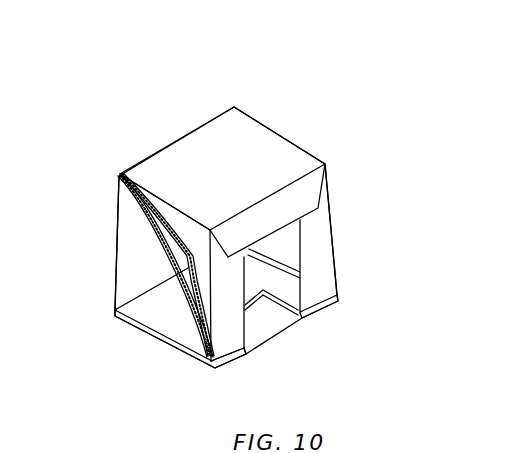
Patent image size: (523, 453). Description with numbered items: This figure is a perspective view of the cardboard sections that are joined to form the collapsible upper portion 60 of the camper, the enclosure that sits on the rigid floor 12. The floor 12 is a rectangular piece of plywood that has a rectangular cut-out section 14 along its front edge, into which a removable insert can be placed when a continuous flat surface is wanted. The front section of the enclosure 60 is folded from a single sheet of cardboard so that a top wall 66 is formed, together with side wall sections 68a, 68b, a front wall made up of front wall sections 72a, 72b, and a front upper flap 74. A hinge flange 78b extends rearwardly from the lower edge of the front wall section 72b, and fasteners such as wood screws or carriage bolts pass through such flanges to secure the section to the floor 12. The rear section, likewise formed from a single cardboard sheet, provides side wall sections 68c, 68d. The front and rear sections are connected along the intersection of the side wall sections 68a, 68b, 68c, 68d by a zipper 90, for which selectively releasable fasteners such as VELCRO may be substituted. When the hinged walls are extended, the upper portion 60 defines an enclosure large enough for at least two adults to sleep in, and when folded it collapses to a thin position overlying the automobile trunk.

The collapsible upper portion 60 is at (320, 98).
The top wall 66 is at (275, 147).
The side wall section 68a is at (172, 218).
The side wall section 68b is at (203, 262).
The side wall section 68c is at (130, 251).
The side wall section 68d is at (160, 315).
The rigid floor 12 is at (188, 353).
The zipper 90 is at (118, 216).
The front upper flap 74 is at (307, 193).
The front wall section 72b is at (315, 245).
The front wall section 72a is at (243, 356).
The rectangular cut-out section 14 is at (267, 345).
The hinge flange 78b is at (297, 302).